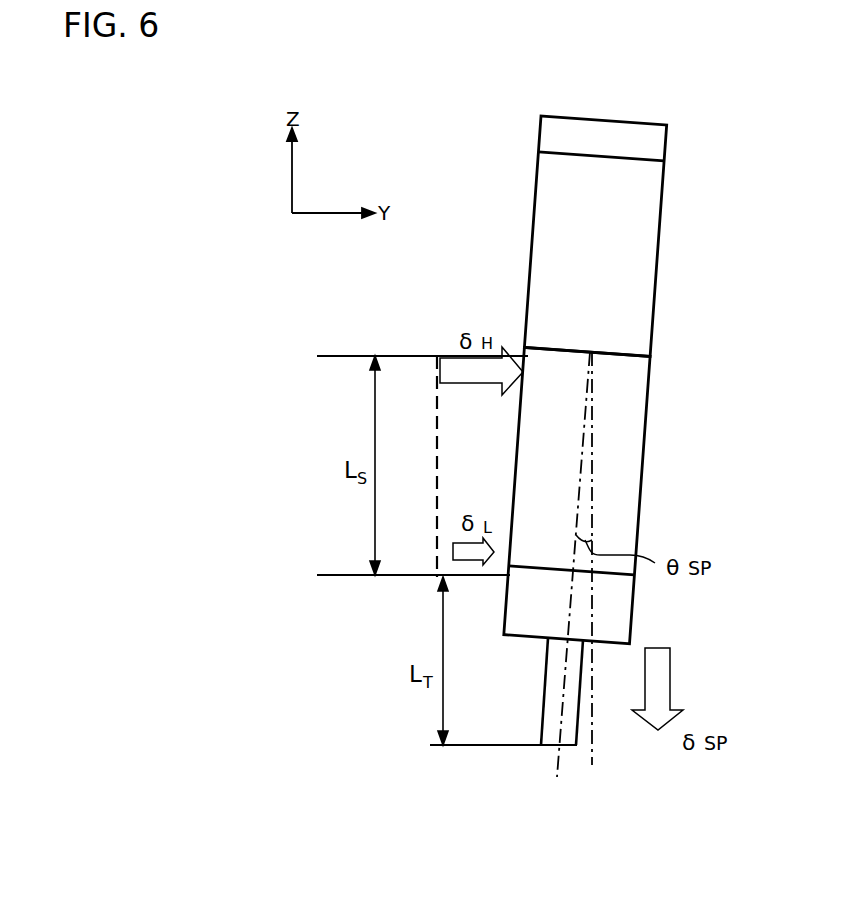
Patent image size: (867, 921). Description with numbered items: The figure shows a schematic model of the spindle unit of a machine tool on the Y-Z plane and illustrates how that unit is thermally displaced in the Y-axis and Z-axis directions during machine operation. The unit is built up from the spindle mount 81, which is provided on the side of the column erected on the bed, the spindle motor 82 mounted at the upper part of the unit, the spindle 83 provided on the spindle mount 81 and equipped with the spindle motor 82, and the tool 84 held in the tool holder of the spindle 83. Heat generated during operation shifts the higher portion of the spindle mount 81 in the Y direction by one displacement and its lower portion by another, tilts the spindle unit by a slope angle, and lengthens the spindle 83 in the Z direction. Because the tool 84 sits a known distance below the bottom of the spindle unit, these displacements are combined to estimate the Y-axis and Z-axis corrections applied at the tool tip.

The spindle mount 81 is at (337, 356).
The spindle motor 82 is at (660, 244).
The spindle 83 is at (645, 457).
The tool 84 is at (577, 745).